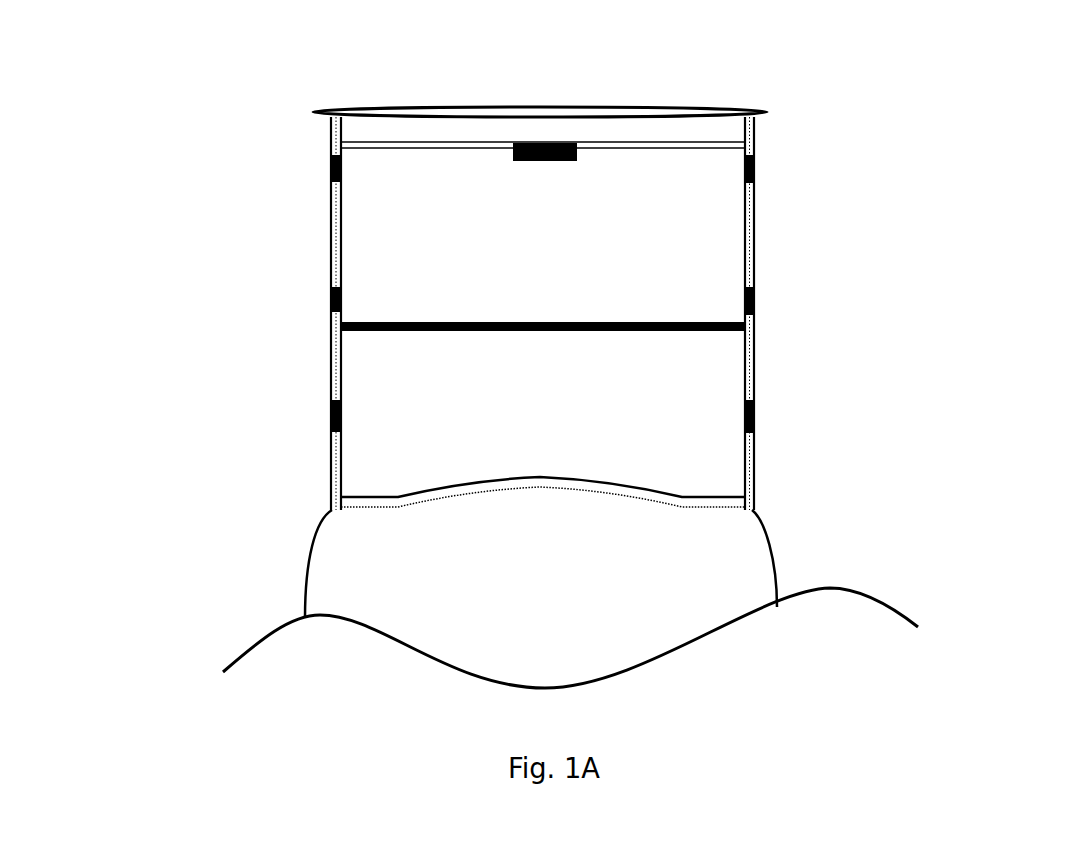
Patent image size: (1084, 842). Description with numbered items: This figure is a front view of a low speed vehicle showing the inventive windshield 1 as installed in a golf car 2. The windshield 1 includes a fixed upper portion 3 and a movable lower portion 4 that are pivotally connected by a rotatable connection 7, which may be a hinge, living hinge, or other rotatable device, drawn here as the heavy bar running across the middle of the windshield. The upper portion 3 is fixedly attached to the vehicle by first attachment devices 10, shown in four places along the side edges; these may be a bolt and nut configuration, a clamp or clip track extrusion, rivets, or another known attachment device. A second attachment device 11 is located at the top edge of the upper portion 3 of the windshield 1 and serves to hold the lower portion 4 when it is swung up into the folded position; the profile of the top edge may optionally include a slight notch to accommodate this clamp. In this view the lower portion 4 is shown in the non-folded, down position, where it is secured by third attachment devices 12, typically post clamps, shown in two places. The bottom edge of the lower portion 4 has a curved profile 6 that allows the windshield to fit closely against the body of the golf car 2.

The windshield 1 is at (653, 147).
The golf car 2 is at (573, 63).
The upper portion of the windshield 3 is at (617, 257).
The lower portion of the windshield 4 is at (588, 426).
The curved profile along the lower portion of the windshield 6 is at (580, 480).
The rotatable connection 7 is at (682, 318).
The first attachment device 10 is at (330, 297).
The second attachment device 11 is at (508, 157).
The third attachment device 12 is at (330, 418).